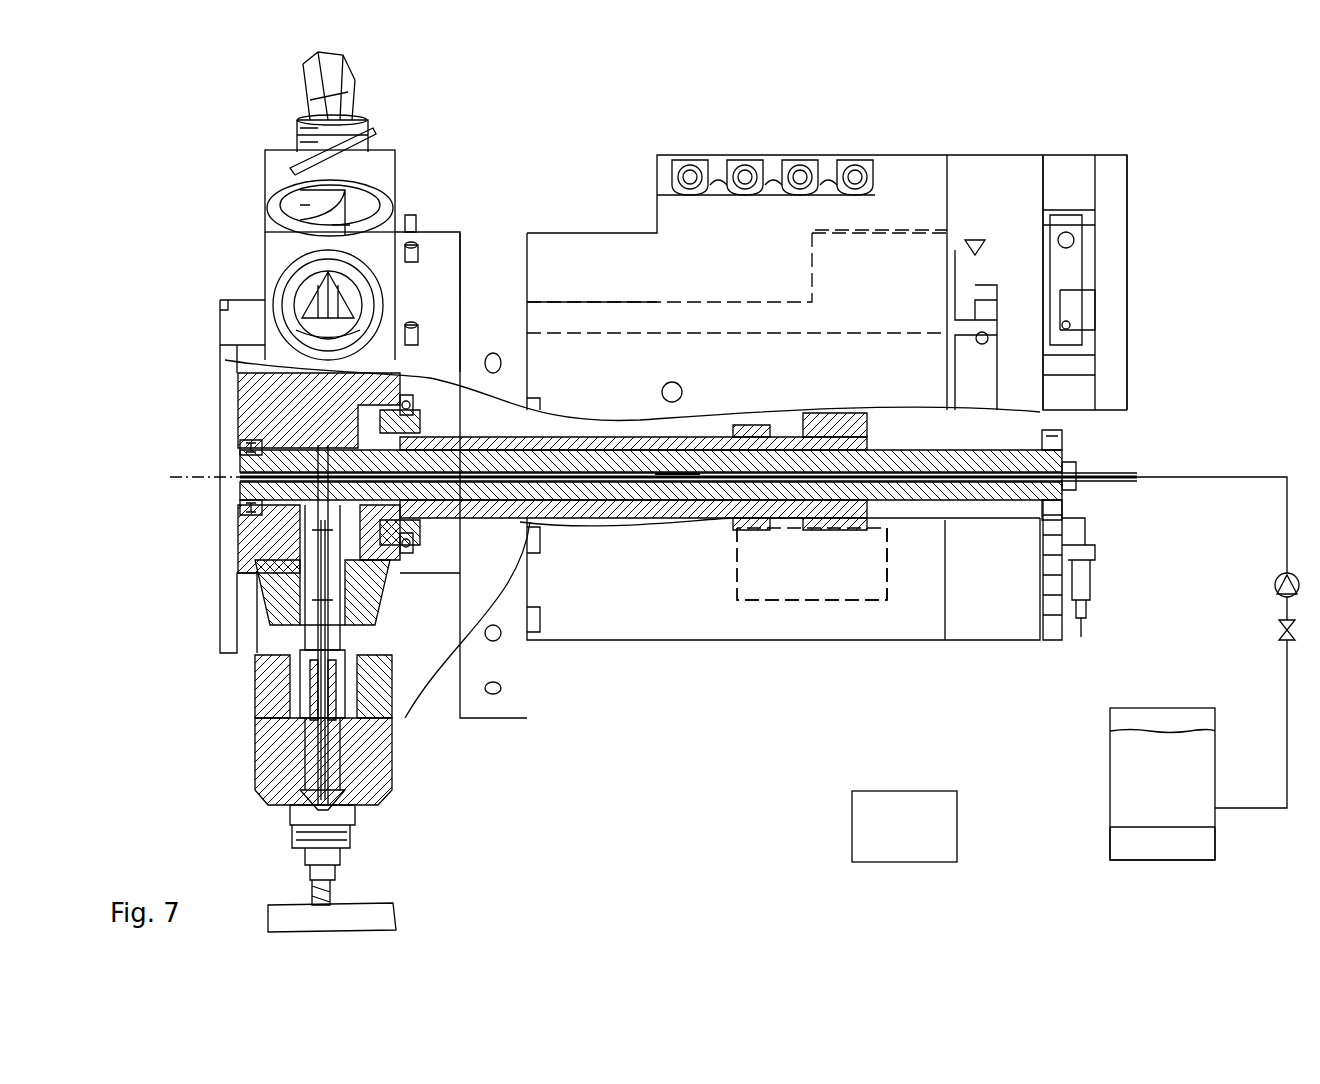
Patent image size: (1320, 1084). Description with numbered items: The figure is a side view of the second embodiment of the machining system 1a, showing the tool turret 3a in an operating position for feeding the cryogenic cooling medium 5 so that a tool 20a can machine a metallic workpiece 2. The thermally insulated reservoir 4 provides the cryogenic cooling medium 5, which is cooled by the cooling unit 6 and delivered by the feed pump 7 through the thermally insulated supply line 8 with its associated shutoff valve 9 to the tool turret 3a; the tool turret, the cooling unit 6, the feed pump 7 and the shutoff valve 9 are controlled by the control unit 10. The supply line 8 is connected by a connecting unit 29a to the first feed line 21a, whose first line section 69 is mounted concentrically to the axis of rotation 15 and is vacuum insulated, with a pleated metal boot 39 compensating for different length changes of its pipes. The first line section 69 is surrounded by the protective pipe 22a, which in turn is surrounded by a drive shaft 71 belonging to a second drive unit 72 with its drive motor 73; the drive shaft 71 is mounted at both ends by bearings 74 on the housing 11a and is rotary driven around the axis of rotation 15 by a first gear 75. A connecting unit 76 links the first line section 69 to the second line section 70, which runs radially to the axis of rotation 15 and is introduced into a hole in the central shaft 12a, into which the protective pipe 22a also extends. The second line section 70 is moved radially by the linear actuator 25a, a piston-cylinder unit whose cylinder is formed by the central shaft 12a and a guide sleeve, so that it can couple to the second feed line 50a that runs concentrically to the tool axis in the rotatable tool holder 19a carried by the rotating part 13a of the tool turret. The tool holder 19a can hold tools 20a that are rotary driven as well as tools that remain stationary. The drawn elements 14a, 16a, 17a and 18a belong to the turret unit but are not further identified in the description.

The machining system 1a is at (1220, 130).
The workpiece 2 is at (385, 920).
The tool turret 3a is at (702, 145).
The reservoir 4 is at (1110, 718).
The cryogenic cooling medium 5 is at (1115, 781).
The cooling unit 6 is at (1110, 850).
The feed pump 7 is at (1273, 582).
The supply line 8 is at (1243, 477).
The shutoff valve 9 is at (1278, 632).
The control unit 10 is at (855, 836).
The housing 11a is at (783, 210).
The central shaft 12a is at (238, 312).
The rotating part 13a is at (262, 178).
The drive motor 14a is at (1135, 215).
The axis of rotation 15 is at (212, 477).
The gearbox 16a is at (884, 243).
The main body 17a is at (553, 318).
The spindle nose housing 18a is at (265, 725).
The tool holder 19a is at (265, 772).
The tool 20a is at (298, 845).
The first feed line 21a is at (660, 486).
The protective pipe 22a is at (588, 525).
The linear actuator 25a is at (265, 547).
The connecting unit 29a is at (1077, 487).
The metal boot 39 is at (1065, 452).
The second feed line 50a is at (345, 765).
The first line section 69 is at (683, 486).
The second line section 70 is at (300, 508).
The drive shaft 71 is at (790, 520).
The second drive unit 72 is at (858, 605).
The drive motor 73 is at (887, 520).
The bearing 74 is at (883, 563).
The first gear 75 is at (742, 532).
The connecting unit 76 is at (250, 446).